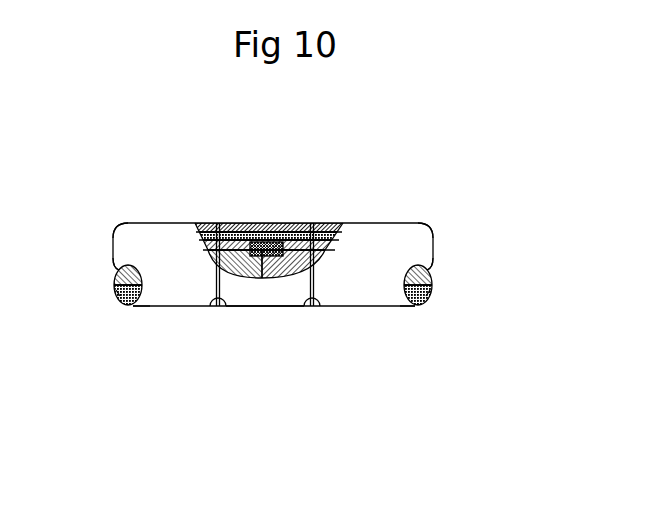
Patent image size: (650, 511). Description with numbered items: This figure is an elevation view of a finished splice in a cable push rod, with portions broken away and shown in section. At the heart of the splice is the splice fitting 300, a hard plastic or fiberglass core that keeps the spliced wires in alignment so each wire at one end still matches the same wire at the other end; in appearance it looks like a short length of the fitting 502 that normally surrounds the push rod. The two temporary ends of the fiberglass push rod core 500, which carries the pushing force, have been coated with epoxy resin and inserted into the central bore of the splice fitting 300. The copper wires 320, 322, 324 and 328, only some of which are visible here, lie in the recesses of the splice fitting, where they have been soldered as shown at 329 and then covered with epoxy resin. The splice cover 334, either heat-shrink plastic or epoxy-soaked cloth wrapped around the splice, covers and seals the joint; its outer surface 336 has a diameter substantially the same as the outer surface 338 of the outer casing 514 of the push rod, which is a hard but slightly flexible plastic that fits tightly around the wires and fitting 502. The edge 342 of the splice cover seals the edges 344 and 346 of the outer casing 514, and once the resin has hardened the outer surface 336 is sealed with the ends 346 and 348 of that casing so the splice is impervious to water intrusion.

The splice fitting 300 is at (228, 222).
The wire 320 is at (116, 275).
The wire 322 is at (130, 308).
The wire 324 is at (115, 290).
The wire 328 is at (236, 222).
The solder joint 329 is at (268, 222).
The splice cover 334 is at (247, 220).
The outer surface of splice cover 336 is at (252, 308).
The outer surface of outer cover 338 is at (130, 222).
The edge of splice cover 342 is at (233, 308).
The edge of outer cover 344 is at (300, 308).
The edge of outer cover 346 is at (213, 309).
The end of outer cover 348 is at (318, 308).
The push rod core 500 is at (116, 268).
The fitting 502 is at (293, 222).
The outer casing 514 is at (150, 220).